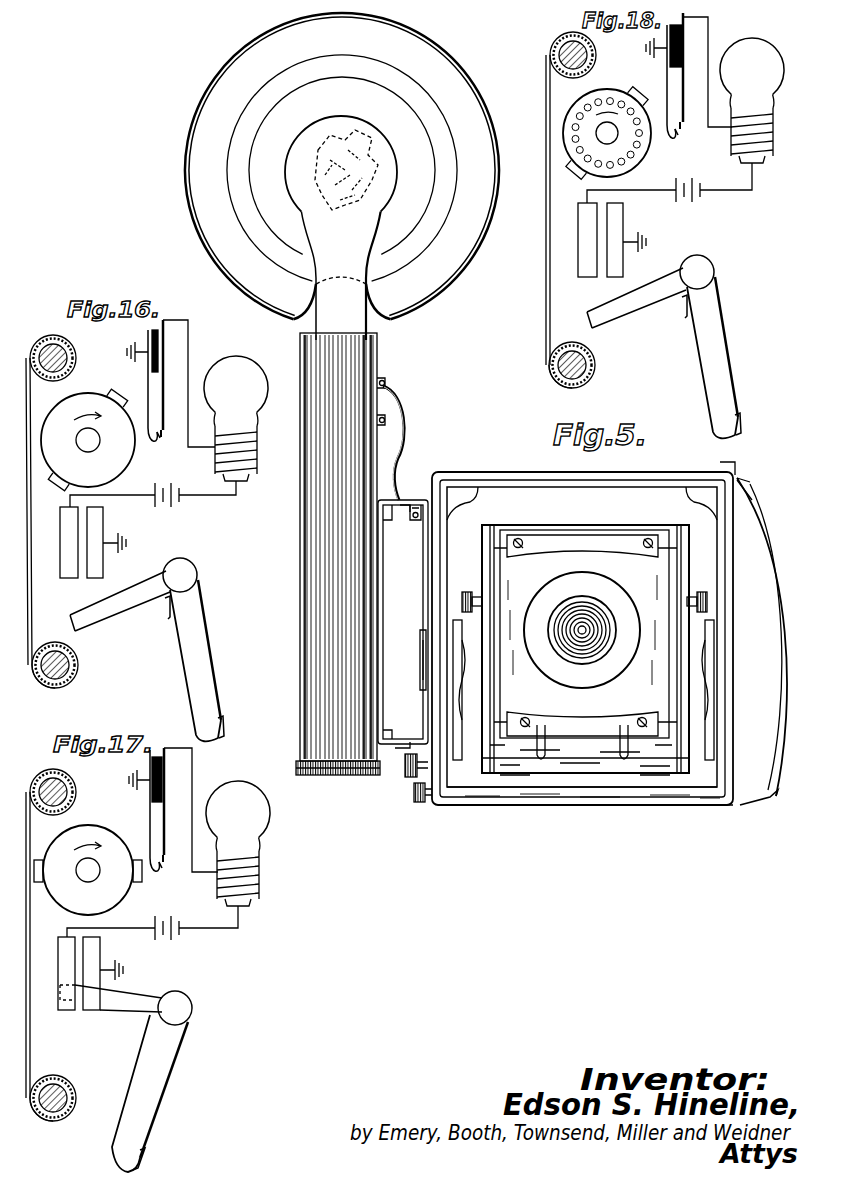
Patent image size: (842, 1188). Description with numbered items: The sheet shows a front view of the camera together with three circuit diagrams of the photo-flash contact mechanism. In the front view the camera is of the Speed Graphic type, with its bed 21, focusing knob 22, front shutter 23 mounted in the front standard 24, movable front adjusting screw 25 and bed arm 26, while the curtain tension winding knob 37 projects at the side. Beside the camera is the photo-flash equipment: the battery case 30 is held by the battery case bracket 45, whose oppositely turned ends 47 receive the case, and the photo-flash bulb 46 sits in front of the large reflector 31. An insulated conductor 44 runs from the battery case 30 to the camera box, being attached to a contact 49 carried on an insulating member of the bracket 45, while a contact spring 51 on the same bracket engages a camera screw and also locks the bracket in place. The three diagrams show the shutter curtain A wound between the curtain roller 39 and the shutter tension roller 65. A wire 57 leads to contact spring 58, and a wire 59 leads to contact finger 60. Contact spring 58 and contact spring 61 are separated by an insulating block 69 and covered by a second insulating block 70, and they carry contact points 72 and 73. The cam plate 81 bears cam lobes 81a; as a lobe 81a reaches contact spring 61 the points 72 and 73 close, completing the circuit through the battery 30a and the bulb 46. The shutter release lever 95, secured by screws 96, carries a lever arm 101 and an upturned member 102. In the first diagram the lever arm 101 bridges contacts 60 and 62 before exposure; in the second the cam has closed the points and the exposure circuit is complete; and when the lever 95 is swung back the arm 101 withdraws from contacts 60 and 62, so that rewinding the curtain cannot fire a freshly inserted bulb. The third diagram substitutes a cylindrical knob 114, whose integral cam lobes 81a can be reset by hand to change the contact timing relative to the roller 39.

In FIG. 5, the camera bed 21 is at (566, 800).
In FIG. 5, the focusing knob 22 is at (420, 803).
In FIG. 5, the front shutter 23 is at (610, 614).
In FIG. 5, the front standard 24 is at (486, 556).
In FIG. 5, the movable front adjusting screw 25 is at (466, 592).
In FIG. 5, the bed arm 26 is at (500, 690).
In FIG. 5, the battery case 30 is at (358, 368).
In FIG. 16, the battery 30a is at (175, 505).
In FIG. 17, the battery 30a is at (172, 933).
In FIG. 18, the battery 30a is at (698, 206).
In FIG. 5, the reflector 31 is at (418, 53).
In FIG. 5, the curtain tension winding knob 37 is at (409, 778).
In FIG. 16, the curtain roller 39 is at (45, 345).
In FIG. 17, the curtain roller 39 is at (45, 782).
In FIG. 18, the curtain roller 39 is at (563, 48).
In FIG. 5, the insulated conductor 44 is at (408, 434).
In FIG. 16, the insulated conductor 44 is at (230, 497).
In FIG. 17, the insulated conductor 44 is at (229, 930).
In FIG. 18, the insulated conductor 44 is at (740, 192).
In FIG. 5, the battery case bracket 45 is at (428, 600).
In FIG. 5, the photo-flash bulb 46 is at (338, 122).
In FIG. 16, the photo-flash bulb 46 is at (248, 370).
In FIG. 17, the photo-flash bulb 46 is at (246, 792).
In FIG. 18, the photo-flash bulb 46 is at (762, 52).
In FIG. 5, the oppositely turned ends 47 is at (405, 510).
In FIG. 5, the contact 49 is at (414, 523).
In FIG. 5, the contact spring 51 is at (420, 688).
In FIG. 16, the wire 57 is at (190, 340).
In FIG. 17, the wire 57 is at (193, 774).
In FIG. 18, the wire 57 is at (710, 36).
In FIG. 16, the contact spring 58 is at (163, 380).
In FIG. 17, the contact spring 58 is at (164, 800).
In FIG. 18, the contact spring 58 is at (684, 80).
In FIG. 18, the wire 59 is at (655, 192).
In FIG. 16, the contact finger 60 is at (68, 571).
In FIG. 17, the contact finger 60 is at (66, 1010).
In FIG. 18, the contact finger 60 is at (588, 273).
In FIG. 16, the contact spring 61 is at (148, 382).
In FIG. 17, the contact spring 61 is at (150, 807).
In FIG. 18, the contact spring 61 is at (667, 78).
In FIG. 16, the contact 62 is at (100, 571).
In FIG. 17, the contact 62 is at (92, 1004).
In FIG. 18, the contact 62 is at (618, 273).
In FIG. 16, the shutter tension roller 65 is at (46, 686).
In FIG. 17, the shutter tension roller 65 is at (42, 1120).
In FIG. 18, the shutter tension roller 65 is at (558, 384).
In FIG. 16, the insulating block 69 is at (148, 333).
In FIG. 17, the insulating block 69 is at (150, 762).
In FIG. 18, the insulating block 69 is at (667, 37).
In FIG. 16, the second insulating block 70 is at (160, 338).
In FIG. 17, the second insulating block 70 is at (164, 765).
In FIG. 18, the second insulating block 70 is at (684, 35).
In FIG. 16, the contact point 72 is at (165, 432).
In FIG. 17, the contact point 72 is at (167, 860).
In FIG. 18, the contact point 72 is at (684, 126).
In FIG. 16, the contact point 73 is at (152, 438).
In FIG. 17, the contact point 73 is at (155, 868).
In FIG. 18, the contact point 73 is at (672, 136).
In FIG. 16, the cam plate 81 is at (108, 452).
In FIG. 17, the cam plate 81 is at (108, 886).
In FIG. 16, the cam lobes 81a is at (114, 392).
In FIG. 17, the cam lobes 81a is at (137, 858).
In FIG. 18, the cam lobes 81a is at (632, 90).
In FIG. 16, the shutter release lever 95 is at (200, 635).
In FIG. 17, the shutter release lever 95 is at (160, 1064).
In FIG. 18, the shutter release lever 95 is at (718, 330).
In FIG. 16, the screws 96 is at (185, 575).
In FIG. 17, the screws 96 is at (181, 1008).
In FIG. 18, the screws 96 is at (702, 272).
In FIG. 16, the lever arm 101 is at (106, 615).
In FIG. 17, the lever arm 101 is at (142, 995).
In FIG. 18, the lever arm 101 is at (624, 316).
In FIG. 16, the upturned member 102 is at (166, 610).
In FIG. 18, the upturned member 102 is at (683, 310).
In FIG. 18, the cylindrical knob 114 is at (588, 133).
In FIG. 18, the shutter curtain A is at (547, 104).